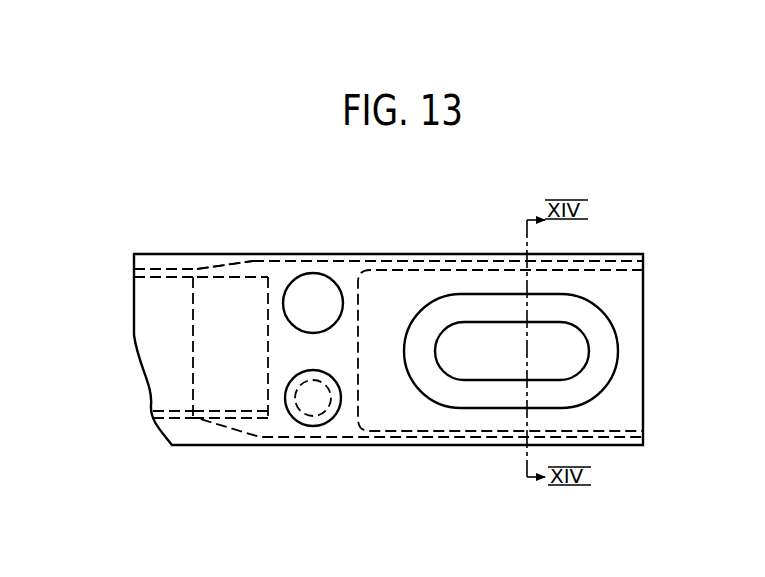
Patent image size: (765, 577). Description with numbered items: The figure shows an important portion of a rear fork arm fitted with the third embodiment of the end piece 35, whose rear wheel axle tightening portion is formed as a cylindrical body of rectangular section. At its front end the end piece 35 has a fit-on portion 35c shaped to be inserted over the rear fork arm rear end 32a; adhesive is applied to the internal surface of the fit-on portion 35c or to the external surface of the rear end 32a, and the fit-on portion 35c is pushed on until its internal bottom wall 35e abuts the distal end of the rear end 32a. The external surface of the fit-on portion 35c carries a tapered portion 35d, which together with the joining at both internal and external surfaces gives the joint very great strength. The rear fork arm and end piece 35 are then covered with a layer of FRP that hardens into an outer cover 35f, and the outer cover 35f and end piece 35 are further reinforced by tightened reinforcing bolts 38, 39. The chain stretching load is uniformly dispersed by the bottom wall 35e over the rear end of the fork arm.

The rear fork arm rear end 32a is at (158, 277).
The end piece 35 is at (220, 265).
The fit-on portion 35c is at (245, 268).
The tapered portion 35d is at (237, 262).
The end piece bottom wall 35e is at (268, 297).
The outer cover 35f is at (428, 254).
The reinforcing bolt 38 is at (325, 317).
The reinforcing bolt 39 is at (332, 402).